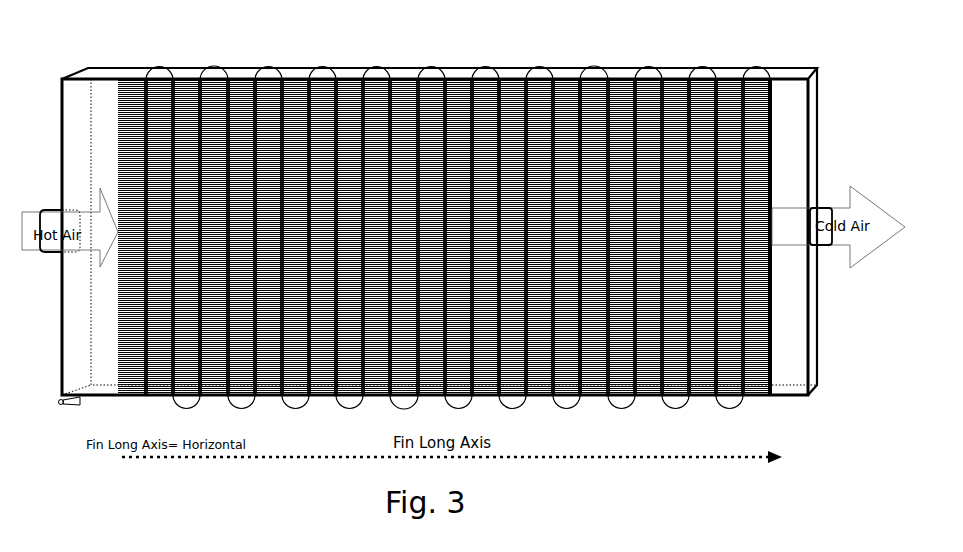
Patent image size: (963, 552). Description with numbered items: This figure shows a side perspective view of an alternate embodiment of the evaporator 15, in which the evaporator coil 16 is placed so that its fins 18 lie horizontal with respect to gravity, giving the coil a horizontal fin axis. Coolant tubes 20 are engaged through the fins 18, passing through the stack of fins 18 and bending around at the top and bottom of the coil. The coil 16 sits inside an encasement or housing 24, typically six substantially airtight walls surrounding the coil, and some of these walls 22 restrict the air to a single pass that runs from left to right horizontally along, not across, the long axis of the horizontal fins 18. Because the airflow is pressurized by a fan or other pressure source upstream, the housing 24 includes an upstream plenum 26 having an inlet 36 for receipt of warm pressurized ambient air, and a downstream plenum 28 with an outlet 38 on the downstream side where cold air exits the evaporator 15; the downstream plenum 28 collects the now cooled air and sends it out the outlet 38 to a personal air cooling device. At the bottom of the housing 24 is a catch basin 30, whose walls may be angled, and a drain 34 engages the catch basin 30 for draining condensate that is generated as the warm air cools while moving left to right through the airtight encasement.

The evaporator 15 is at (608, 62).
The evaporator coil 16 is at (758, 96).
The fins 18 is at (769, 104).
The coolant tubes 20 is at (673, 401).
The walls 22 is at (509, 67).
The encasement or housing 24 is at (792, 67).
The upstream plenum 26 is at (100, 298).
The downstream plenum 28 is at (779, 327).
The catch basin 30 is at (80, 403).
The drain 34 is at (58, 400).
The inlet 36 is at (60, 209).
The outlet 38 is at (822, 247).